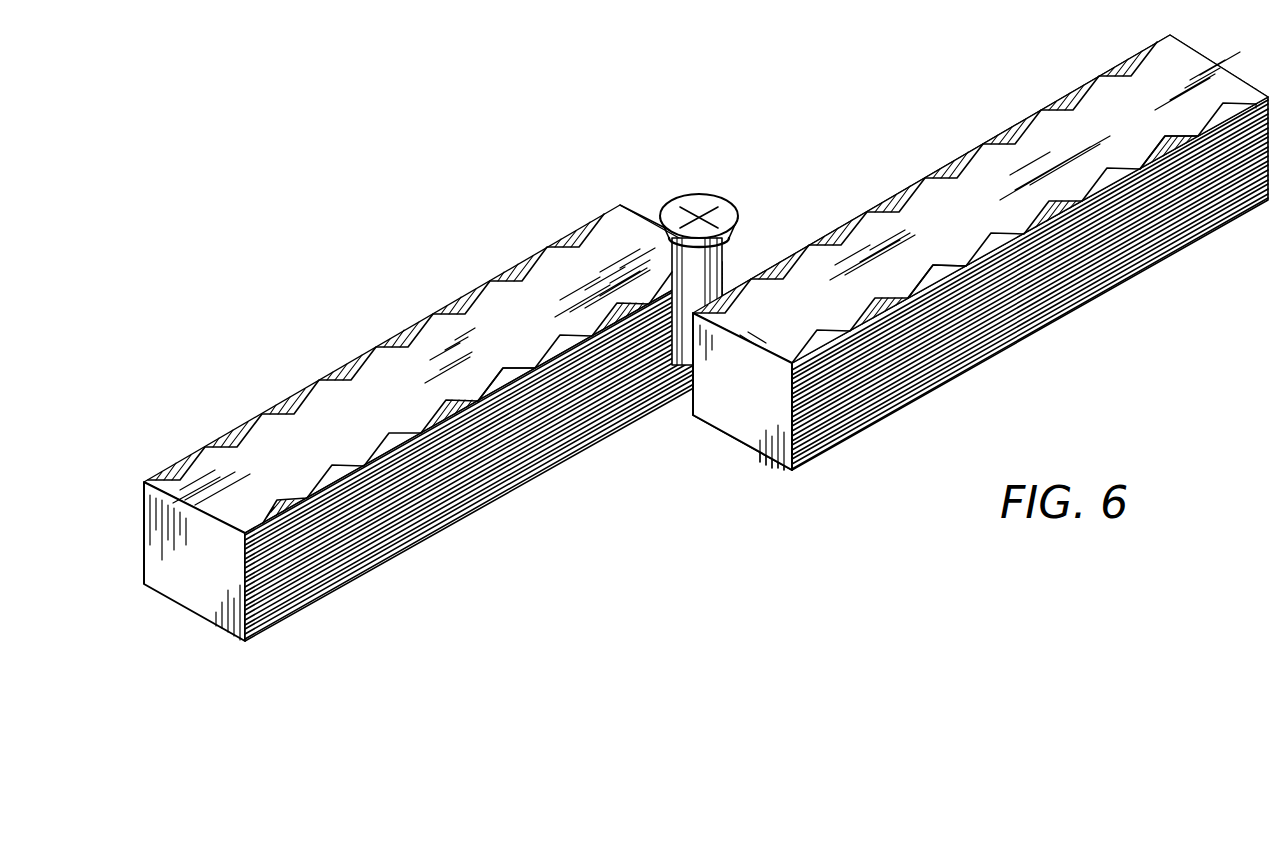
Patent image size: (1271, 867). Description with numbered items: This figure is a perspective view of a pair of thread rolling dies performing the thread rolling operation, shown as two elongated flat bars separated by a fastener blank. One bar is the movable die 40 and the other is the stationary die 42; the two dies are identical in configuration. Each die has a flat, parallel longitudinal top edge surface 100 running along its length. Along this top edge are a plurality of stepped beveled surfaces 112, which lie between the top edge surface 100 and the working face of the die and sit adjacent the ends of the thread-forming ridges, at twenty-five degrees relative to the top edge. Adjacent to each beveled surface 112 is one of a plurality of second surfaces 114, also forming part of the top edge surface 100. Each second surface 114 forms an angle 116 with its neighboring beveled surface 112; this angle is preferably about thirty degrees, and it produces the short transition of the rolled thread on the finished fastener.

The movable die 40 is at (400, 365).
The stationary die 42 is at (980, 252).
The top edge surface 100 is at (275, 445).
The stepped beveled surfaces 112 is at (525, 258).
The second surfaces 114 is at (467, 403).
The angle 116 is at (965, 265).